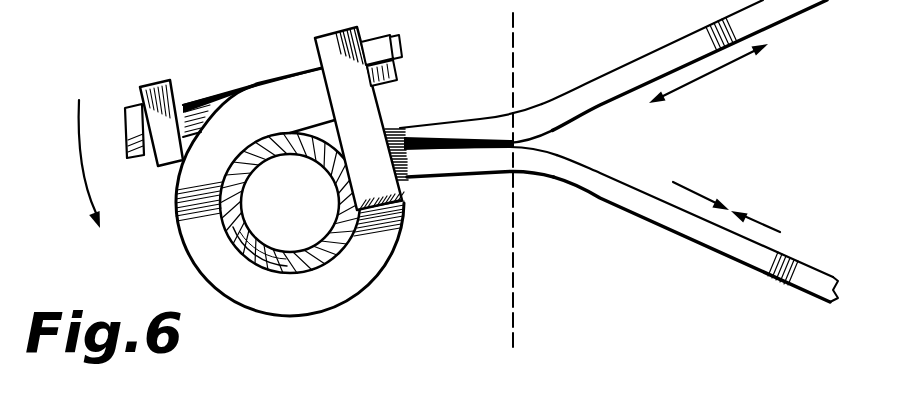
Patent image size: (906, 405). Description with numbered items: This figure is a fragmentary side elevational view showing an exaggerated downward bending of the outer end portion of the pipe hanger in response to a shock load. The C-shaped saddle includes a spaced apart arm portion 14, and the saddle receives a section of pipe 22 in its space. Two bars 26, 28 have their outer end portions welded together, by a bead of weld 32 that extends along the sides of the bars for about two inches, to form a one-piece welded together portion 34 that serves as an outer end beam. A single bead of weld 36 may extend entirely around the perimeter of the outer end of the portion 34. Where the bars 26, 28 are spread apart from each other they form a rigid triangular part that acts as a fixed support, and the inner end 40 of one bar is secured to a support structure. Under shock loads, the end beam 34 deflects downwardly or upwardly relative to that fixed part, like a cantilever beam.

The arm portion 14 is at (172, 163).
The pipe 22 is at (288, 270).
The bar 26 is at (647, 64).
The bar 28 is at (667, 222).
The bead of weld 32 is at (470, 157).
The welded together portion 34 is at (455, 120).
The bead of weld 36 is at (407, 182).
The inner end 40 is at (530, 297).